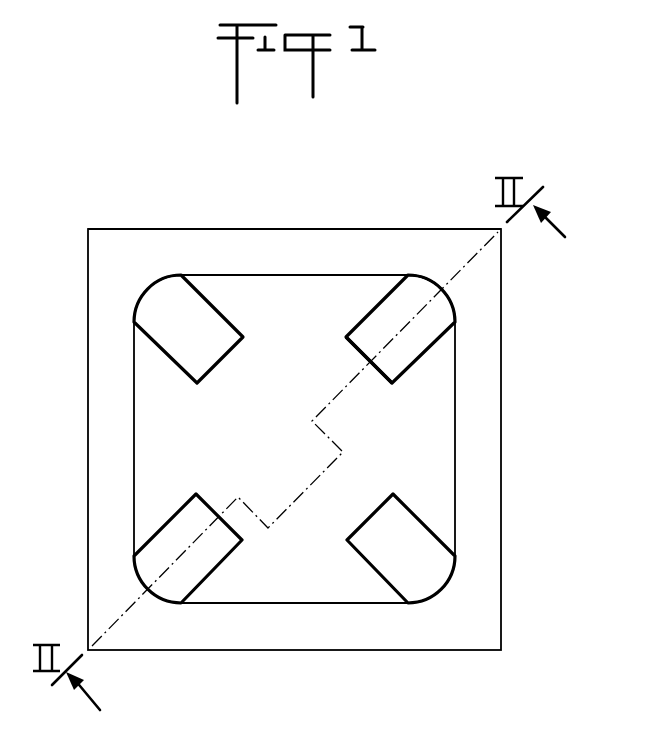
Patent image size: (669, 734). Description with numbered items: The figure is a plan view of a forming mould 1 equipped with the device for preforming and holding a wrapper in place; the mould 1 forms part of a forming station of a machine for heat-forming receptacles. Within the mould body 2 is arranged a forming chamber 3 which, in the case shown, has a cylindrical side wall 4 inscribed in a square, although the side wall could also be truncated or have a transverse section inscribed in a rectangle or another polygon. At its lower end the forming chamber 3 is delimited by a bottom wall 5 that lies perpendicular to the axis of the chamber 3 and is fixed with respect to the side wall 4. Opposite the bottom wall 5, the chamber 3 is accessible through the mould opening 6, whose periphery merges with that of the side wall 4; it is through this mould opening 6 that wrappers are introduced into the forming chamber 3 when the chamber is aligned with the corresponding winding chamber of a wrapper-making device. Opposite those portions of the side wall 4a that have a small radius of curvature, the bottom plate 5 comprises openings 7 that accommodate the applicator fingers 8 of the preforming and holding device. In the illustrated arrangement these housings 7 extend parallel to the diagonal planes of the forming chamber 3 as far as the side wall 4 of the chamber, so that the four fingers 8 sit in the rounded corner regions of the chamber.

The forming mould 1 is at (80, 549).
The mould body 2 is at (353, 231).
The forming chamber 3 is at (394, 457).
The side wall 4 is at (446, 456).
The portions of side wall having a small radius of curvature 4a is at (456, 301).
The bottom wall 5 is at (314, 577).
The mould opening 6 is at (350, 610).
The openings 7 is at (412, 370).
The applicator fingers 8 is at (428, 333).